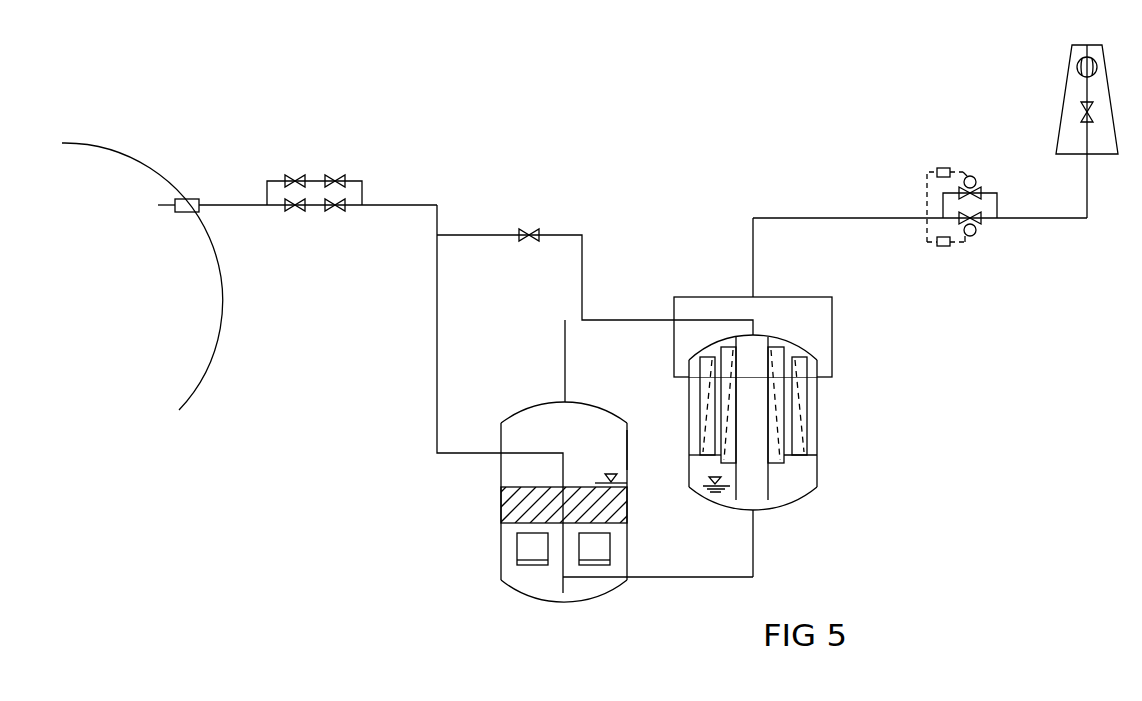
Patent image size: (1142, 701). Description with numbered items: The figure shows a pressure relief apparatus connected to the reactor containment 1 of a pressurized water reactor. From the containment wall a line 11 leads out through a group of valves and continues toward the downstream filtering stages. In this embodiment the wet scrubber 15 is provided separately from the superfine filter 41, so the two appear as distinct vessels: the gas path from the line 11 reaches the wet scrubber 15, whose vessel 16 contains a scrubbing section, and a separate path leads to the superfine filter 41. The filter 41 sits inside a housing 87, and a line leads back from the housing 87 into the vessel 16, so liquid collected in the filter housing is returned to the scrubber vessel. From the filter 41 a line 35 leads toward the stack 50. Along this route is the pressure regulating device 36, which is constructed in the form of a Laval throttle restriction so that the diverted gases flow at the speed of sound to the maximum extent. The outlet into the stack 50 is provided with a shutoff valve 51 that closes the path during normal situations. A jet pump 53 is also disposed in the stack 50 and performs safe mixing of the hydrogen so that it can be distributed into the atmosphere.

The reactor containment 1 is at (150, 171).
The feed conduit 11 is at (403, 205).
The wet scrubber 15 is at (659, 549).
The vessel 16 is at (627, 448).
The vent line 35 is at (822, 218).
The pressure regulating device 36 is at (972, 172).
The superfine filter 41 is at (817, 407).
The housing 87 is at (810, 479).
The stack 50 is at (1114, 66).
The shutoff valve 51 is at (1080, 102).
The jet pump 53 is at (1077, 65).